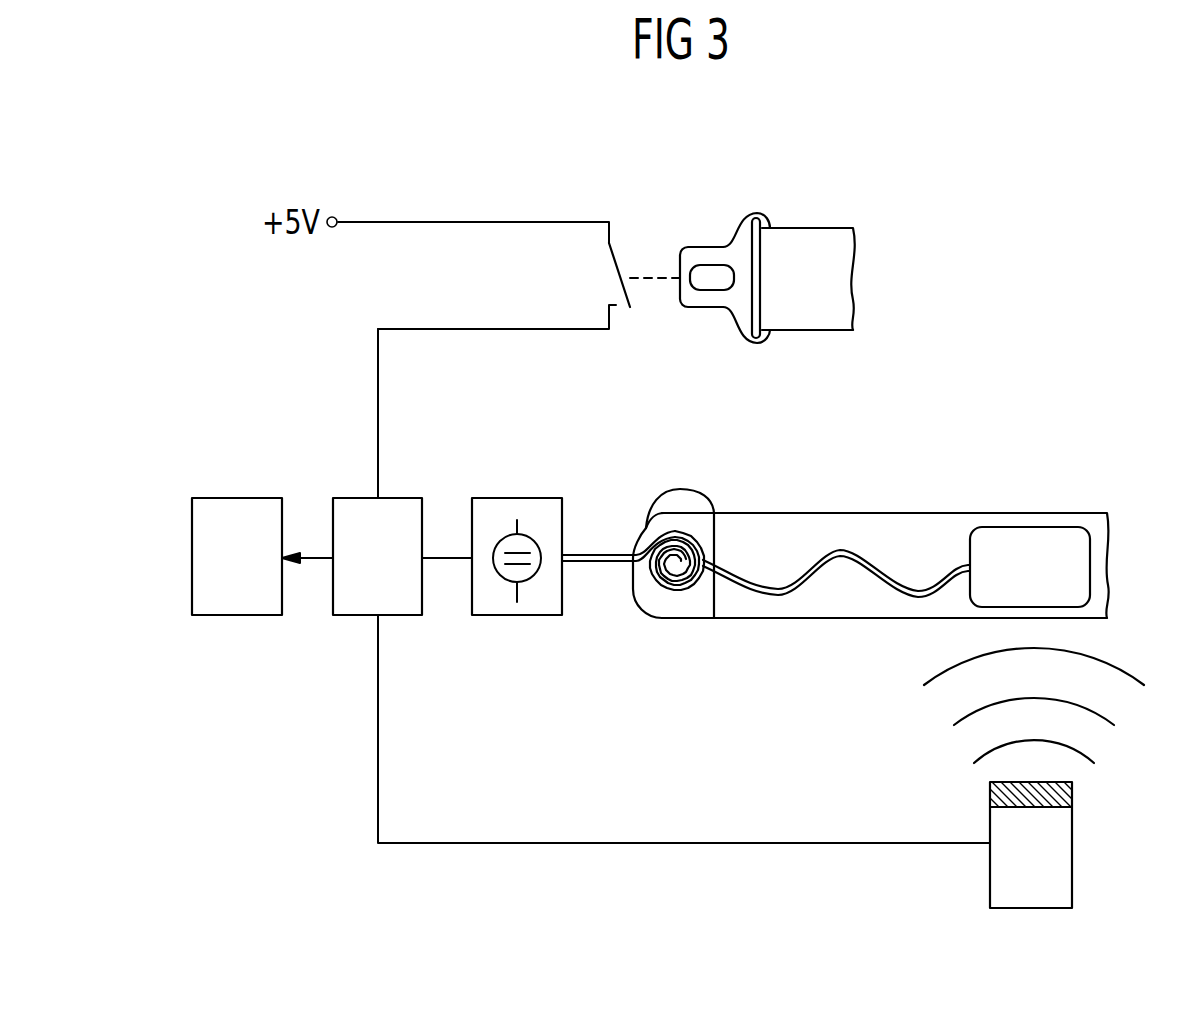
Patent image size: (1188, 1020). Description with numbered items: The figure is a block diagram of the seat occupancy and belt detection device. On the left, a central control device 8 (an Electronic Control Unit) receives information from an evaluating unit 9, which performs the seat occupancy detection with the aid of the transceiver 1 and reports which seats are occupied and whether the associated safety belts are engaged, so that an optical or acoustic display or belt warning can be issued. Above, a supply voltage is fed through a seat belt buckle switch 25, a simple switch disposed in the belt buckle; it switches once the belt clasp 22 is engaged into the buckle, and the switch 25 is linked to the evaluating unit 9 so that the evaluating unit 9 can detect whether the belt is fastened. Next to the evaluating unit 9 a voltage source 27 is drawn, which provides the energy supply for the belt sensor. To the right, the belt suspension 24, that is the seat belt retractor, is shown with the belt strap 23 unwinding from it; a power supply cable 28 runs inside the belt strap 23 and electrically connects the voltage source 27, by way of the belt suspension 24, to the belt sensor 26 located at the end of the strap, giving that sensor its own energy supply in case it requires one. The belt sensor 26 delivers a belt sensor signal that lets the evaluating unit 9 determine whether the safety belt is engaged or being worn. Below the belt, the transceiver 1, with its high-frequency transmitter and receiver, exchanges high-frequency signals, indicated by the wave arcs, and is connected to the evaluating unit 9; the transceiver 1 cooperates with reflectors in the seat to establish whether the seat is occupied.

The transceiver 1 is at (1057, 857).
The central control device 8 is at (237, 617).
The evaluating unit 9 is at (402, 617).
The belt clasp 22 is at (742, 246).
The belt strap 23 is at (818, 240).
The belt suspension 24 is at (687, 490).
The seat belt buckle switch 25 is at (620, 258).
The belt sensor 26 is at (1072, 586).
The signal source 27 is at (535, 617).
The power supply cable 28 is at (769, 597).